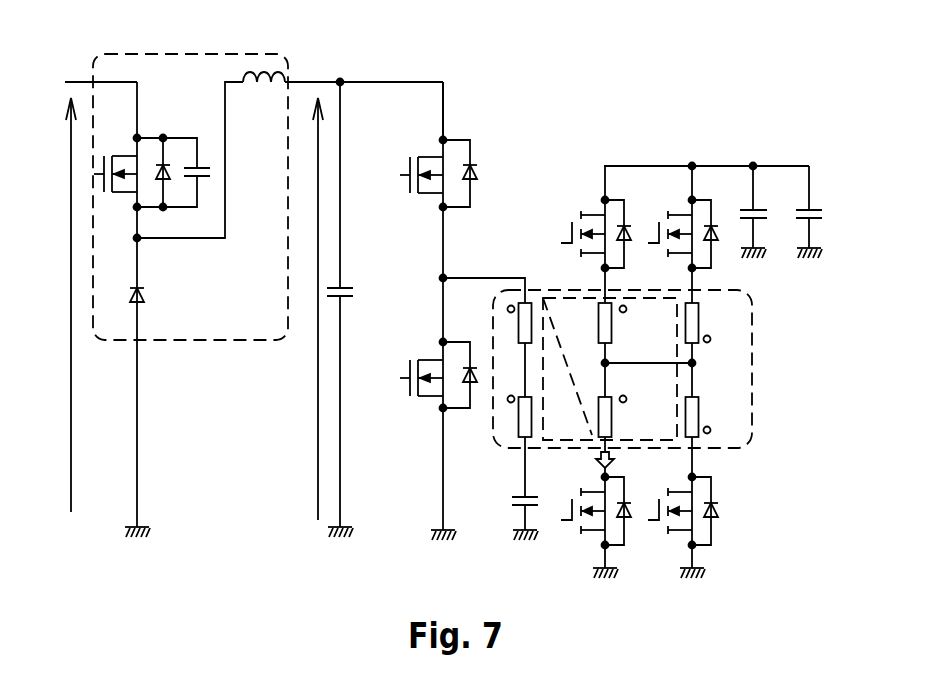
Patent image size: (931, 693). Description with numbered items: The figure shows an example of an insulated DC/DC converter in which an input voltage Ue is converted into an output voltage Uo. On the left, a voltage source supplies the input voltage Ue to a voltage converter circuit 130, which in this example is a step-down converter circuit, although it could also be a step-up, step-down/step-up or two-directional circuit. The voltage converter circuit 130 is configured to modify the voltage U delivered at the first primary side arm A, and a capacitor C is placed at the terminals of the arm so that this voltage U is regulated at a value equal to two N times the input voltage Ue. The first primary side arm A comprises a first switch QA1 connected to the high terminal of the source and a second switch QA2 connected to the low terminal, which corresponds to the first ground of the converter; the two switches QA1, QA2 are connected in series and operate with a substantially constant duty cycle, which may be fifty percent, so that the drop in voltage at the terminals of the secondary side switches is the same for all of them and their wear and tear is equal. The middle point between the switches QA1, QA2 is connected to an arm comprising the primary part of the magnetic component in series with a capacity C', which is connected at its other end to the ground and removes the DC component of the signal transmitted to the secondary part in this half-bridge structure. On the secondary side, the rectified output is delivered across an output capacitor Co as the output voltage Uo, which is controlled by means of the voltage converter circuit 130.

The voltage converter circuit 130 is at (192, 341).
The first primary side arm A is at (455, 118).
The first switch QA1 is at (410, 193).
The second switch QA2 is at (432, 396).
The capacitor C is at (351, 309).
The capacity C' is at (512, 488).
The output capacitor Co is at (761, 212).
The output voltage Uo is at (819, 212).
The voltage at the terminals of the first primary side arm U is at (311, 309).
The input voltage Ue is at (58, 305).